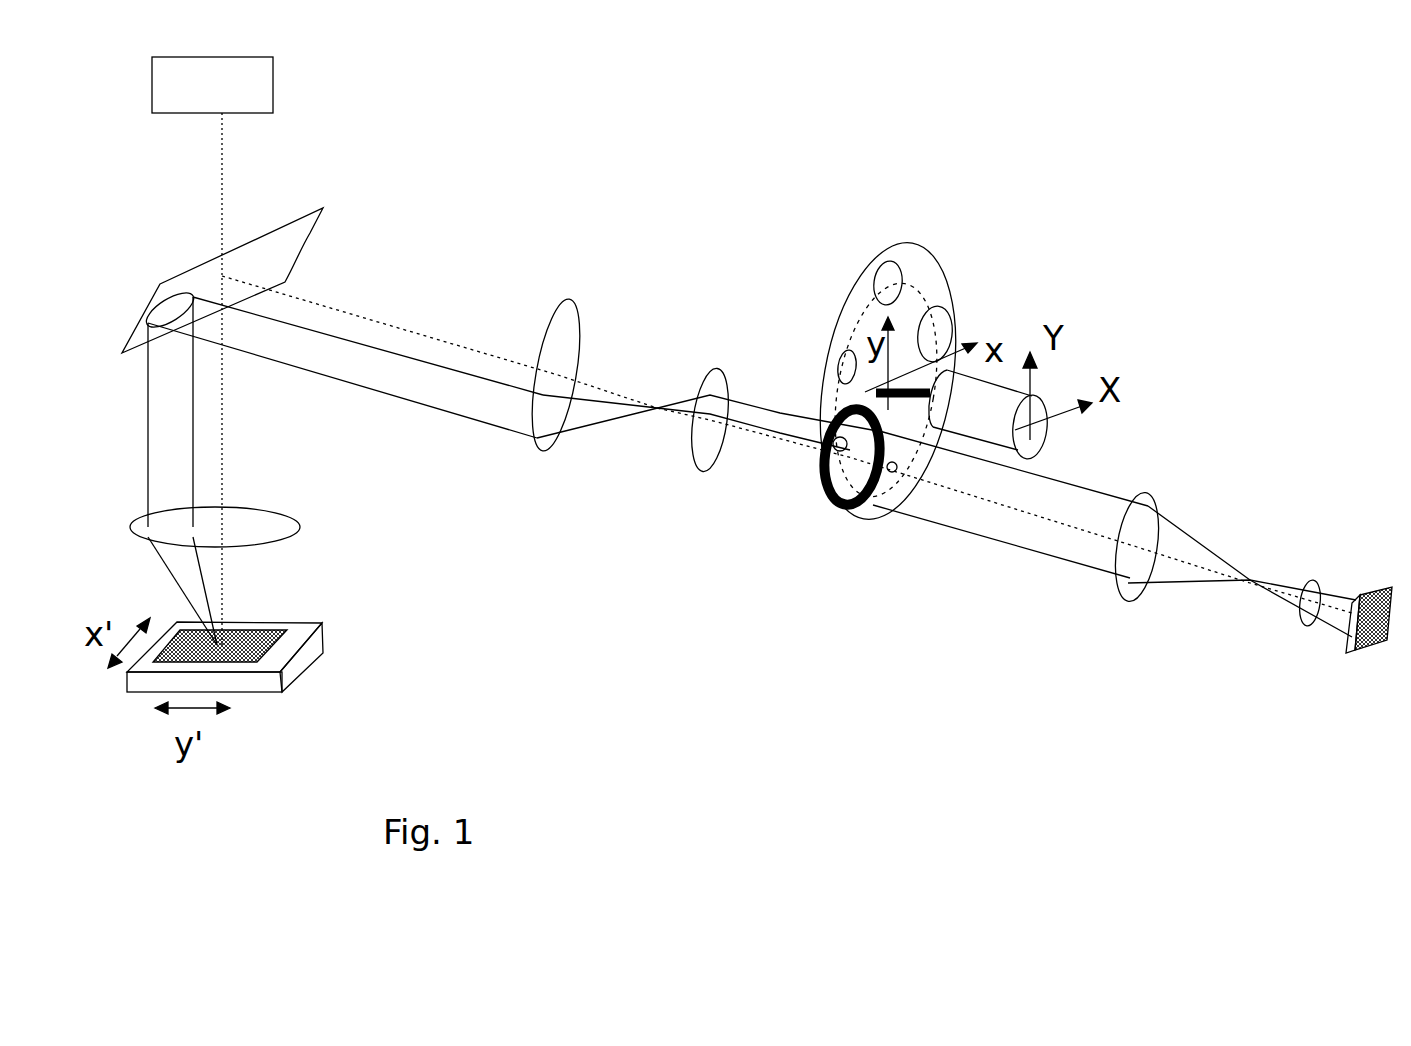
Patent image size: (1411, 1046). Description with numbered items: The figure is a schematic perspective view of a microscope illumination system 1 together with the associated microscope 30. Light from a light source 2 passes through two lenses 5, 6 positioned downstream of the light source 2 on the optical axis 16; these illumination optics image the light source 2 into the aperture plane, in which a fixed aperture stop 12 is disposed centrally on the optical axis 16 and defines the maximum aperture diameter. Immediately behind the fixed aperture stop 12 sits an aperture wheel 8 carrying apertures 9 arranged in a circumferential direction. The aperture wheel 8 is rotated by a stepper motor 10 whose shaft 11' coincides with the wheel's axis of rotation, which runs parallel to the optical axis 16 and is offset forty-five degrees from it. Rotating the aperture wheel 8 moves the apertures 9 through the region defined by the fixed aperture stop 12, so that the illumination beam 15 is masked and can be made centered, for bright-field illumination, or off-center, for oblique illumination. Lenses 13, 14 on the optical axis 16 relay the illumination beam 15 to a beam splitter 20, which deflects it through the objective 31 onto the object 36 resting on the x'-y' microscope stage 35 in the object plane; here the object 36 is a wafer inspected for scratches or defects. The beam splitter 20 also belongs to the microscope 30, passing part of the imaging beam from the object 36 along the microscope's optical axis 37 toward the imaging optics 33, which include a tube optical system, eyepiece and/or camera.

The microscope illumination system 1 is at (835, 160).
The light source 2 is at (1374, 644).
The lens 5 is at (1312, 580).
The lens 6 is at (1147, 492).
The aperture wheel 8 is at (935, 250).
The aperture 9 is at (880, 263).
The stepper motor 10 is at (1005, 398).
The shaft 11' is at (911, 499).
The fixed aperture stop 12 is at (838, 508).
The lens 13 is at (718, 368).
The lens 14 is at (563, 300).
The illumination beam 15 is at (150, 420).
The optical axis 16 is at (390, 328).
The beam splitter 20 is at (325, 212).
The microscope 30 is at (138, 230).
The objective 31 is at (296, 524).
The imaging optics 33 is at (272, 82).
The microscope stage 35 is at (262, 682).
The object 36 is at (250, 640).
The optical axis 37 is at (224, 172).